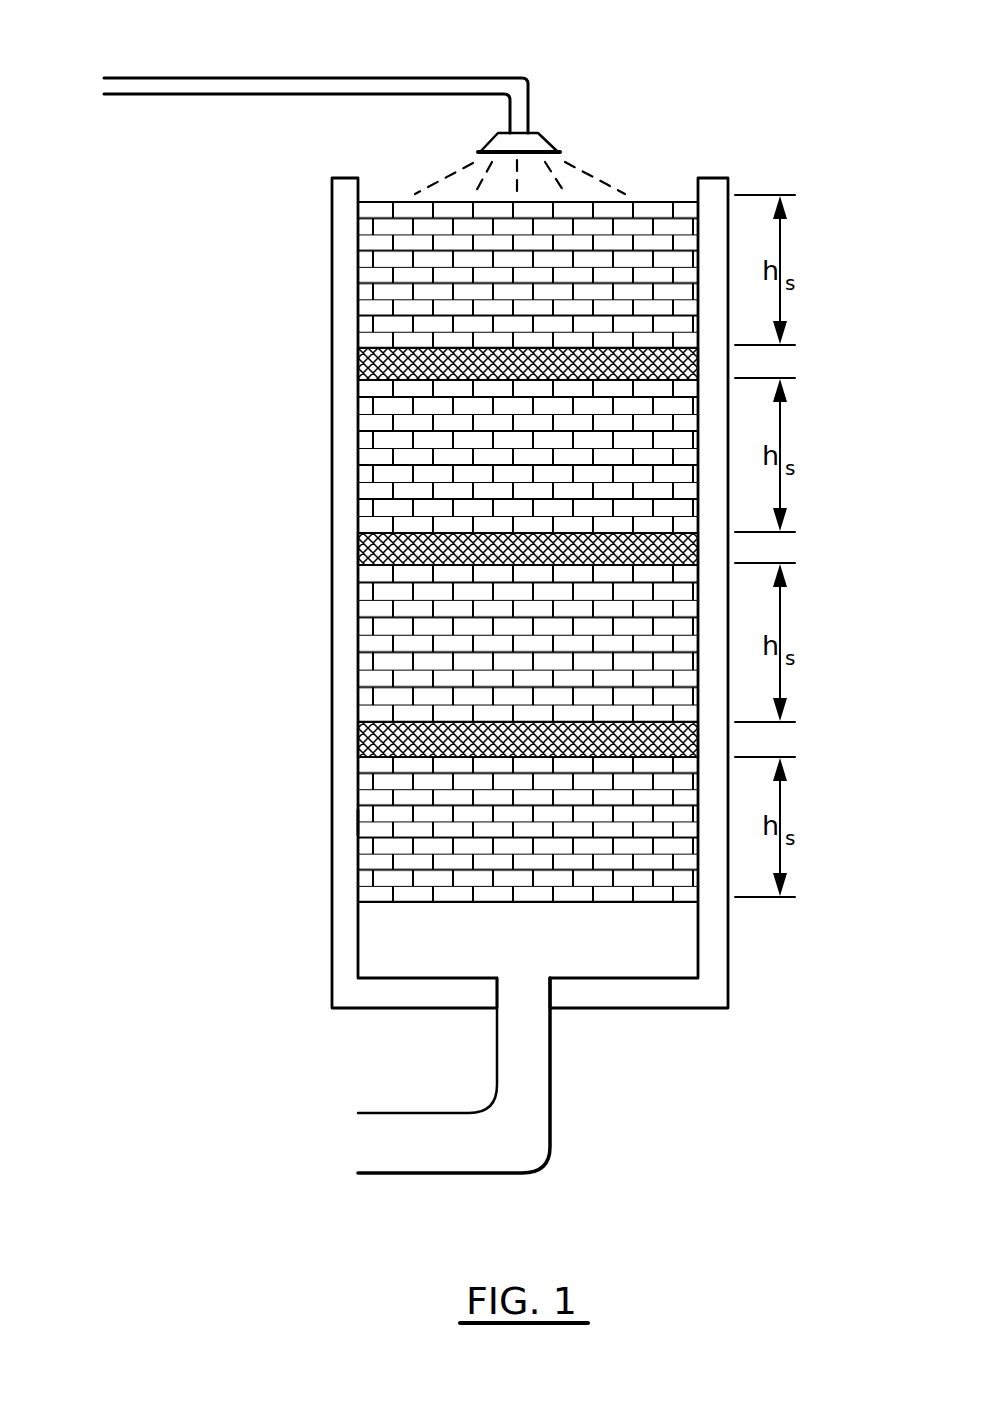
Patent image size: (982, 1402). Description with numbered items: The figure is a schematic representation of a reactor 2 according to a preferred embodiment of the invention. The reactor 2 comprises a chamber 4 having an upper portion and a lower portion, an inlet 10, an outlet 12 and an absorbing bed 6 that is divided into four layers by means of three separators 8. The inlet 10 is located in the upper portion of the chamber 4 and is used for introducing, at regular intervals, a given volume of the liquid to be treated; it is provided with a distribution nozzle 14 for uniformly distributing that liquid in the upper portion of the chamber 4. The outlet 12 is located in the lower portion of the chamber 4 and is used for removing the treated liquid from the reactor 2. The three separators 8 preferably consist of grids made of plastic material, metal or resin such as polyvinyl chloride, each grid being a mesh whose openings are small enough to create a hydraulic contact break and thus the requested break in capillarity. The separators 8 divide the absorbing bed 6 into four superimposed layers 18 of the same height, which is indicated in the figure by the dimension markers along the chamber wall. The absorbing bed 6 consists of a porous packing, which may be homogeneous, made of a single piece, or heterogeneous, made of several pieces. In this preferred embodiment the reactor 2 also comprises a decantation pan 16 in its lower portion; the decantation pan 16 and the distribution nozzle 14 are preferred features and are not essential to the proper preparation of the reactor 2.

The reactor 2 is at (256, 644).
The chamber 4 is at (333, 715).
The absorbing bed 6 is at (458, 259).
The separators 8 is at (365, 378).
The inlet 10 is at (250, 78).
The outlet 12 is at (553, 1092).
The distribution nozzle 14 is at (550, 140).
The decantation pan 16 is at (455, 952).
The superimposed layers 18 is at (342, 823).